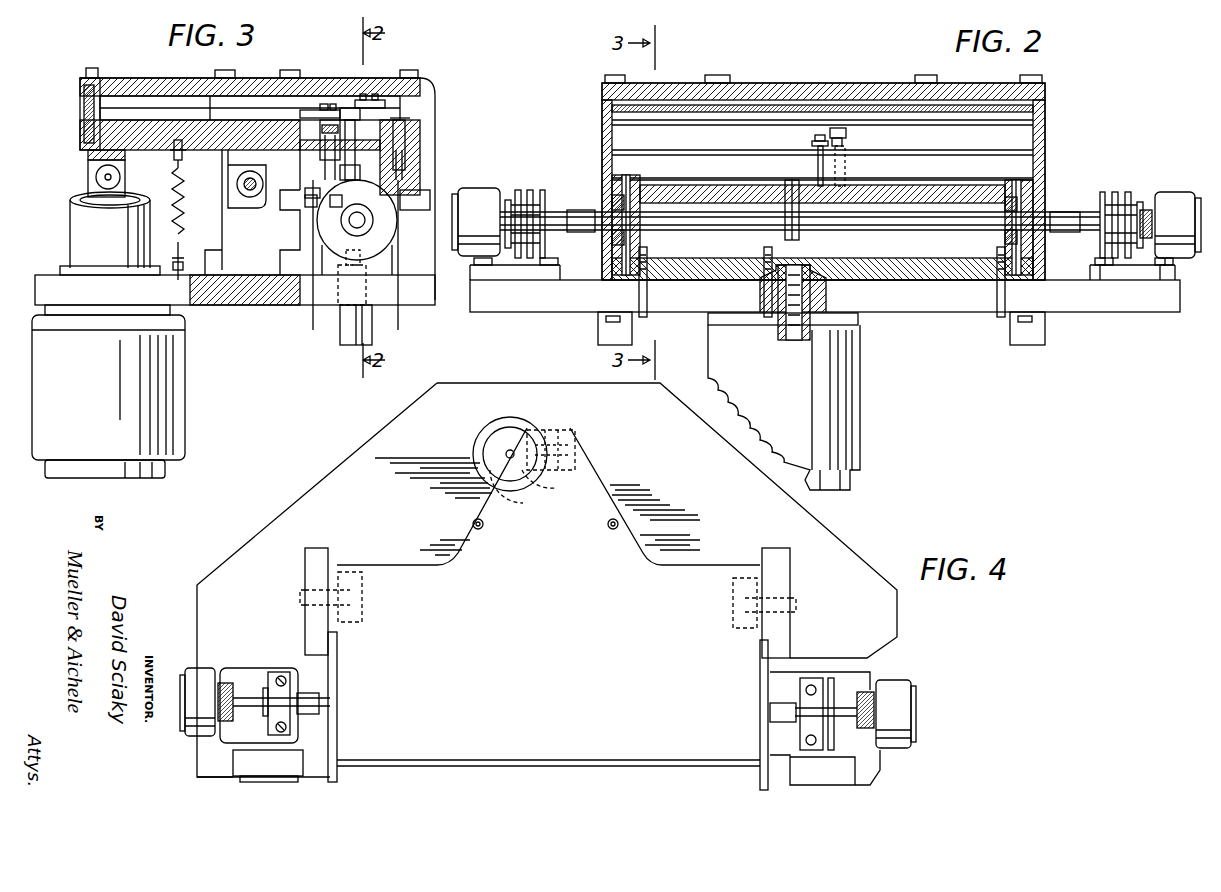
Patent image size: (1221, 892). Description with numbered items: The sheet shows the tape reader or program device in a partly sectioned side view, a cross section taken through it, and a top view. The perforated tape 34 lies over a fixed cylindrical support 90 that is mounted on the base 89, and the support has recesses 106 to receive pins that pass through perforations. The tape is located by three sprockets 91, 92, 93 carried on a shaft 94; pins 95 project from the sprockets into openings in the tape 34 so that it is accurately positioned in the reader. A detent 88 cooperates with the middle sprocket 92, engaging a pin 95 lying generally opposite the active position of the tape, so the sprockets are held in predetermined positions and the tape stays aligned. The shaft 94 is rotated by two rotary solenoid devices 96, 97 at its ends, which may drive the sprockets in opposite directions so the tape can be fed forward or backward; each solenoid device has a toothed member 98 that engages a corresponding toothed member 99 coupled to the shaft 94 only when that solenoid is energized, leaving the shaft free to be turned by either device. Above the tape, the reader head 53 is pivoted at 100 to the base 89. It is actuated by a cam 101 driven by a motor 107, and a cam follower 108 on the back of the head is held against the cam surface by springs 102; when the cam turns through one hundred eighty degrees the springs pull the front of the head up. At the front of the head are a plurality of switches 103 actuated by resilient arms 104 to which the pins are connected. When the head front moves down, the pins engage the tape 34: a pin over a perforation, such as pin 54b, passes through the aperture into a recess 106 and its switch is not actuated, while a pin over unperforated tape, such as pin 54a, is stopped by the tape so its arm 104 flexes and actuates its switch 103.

In FIG. 3, the tape 34 is at (400, 320).
In FIG. 2, the tape 34 is at (958, 180).
In FIG. 3, the reader head 53 is at (300, 80).
In FIG. 2, the reader head 53 is at (695, 82).
In FIG. 4, the reader head 53 is at (545, 655).
In FIG. 3, the pin 54a is at (395, 118).
In FIG. 2, the pin 54a is at (815, 160).
In FIG. 3, the pin 54b is at (312, 192).
In FIG. 2, the pin 54b is at (845, 165).
In FIG. 3, the detent 88 is at (342, 332).
In FIG. 2, the detent 88 is at (822, 292).
In FIG. 2, the base 89 is at (925, 310).
In FIG. 4, the base 89 is at (845, 575).
In FIG. 3, the fixed cylindrical support 90 is at (405, 190).
In FIG. 2, the fixed cylindrical support 90 is at (1040, 198).
In FIG. 2, the sprocket 91 is at (1033, 205).
In FIG. 2, the sprocket 92 is at (790, 180).
In FIG. 2, the sprocket 93 is at (612, 195).
In FIG. 3, the shaft 94 is at (352, 235).
In FIG. 2, the shaft 94 is at (1040, 228).
In FIG. 4, the shaft 94 is at (770, 712).
In FIG. 2, the pins 95 is at (615, 180).
In FIG. 2, the rotary solenoid device 96 is at (1165, 196).
In FIG. 4, the rotary solenoid device 96 is at (890, 690).
In FIG. 2, the rotary solenoid device 97 is at (476, 192).
In FIG. 4, the rotary solenoid device 97 is at (200, 675).
In FIG. 2, the toothed member 98 is at (1150, 260).
In FIG. 4, the toothed member 98 is at (222, 688).
In FIG. 2, the toothed member 99 is at (1132, 185).
In FIG. 4, the toothed member 99 is at (235, 700).
In FIG. 3, the pivot 100 is at (240, 185).
In FIG. 4, the pivot 100 is at (303, 600).
In FIG. 3, the cam 101 is at (76, 197).
In FIG. 4, the cam 101 is at (482, 448).
In FIG. 3, the springs 102 is at (170, 195).
In FIG. 4, the springs 102 is at (472, 524).
In FIG. 3, the switches 103 is at (335, 128).
In FIG. 3, the resilient arms 104 is at (350, 130).
In FIG. 3, the recesses 106 is at (360, 210).
In FIG. 2, the recesses 106 is at (675, 185).
In FIG. 3, the motor 107 is at (178, 378).
In FIG. 2, the motor 107 is at (840, 393).
In FIG. 3, the cam follower 108 is at (95, 170).
In FIG. 4, the cam follower 108 is at (570, 445).